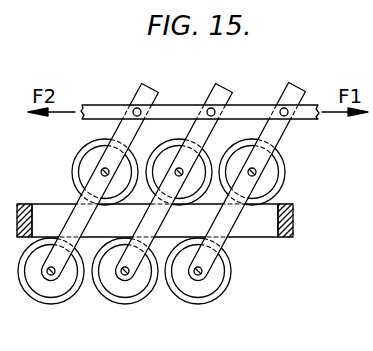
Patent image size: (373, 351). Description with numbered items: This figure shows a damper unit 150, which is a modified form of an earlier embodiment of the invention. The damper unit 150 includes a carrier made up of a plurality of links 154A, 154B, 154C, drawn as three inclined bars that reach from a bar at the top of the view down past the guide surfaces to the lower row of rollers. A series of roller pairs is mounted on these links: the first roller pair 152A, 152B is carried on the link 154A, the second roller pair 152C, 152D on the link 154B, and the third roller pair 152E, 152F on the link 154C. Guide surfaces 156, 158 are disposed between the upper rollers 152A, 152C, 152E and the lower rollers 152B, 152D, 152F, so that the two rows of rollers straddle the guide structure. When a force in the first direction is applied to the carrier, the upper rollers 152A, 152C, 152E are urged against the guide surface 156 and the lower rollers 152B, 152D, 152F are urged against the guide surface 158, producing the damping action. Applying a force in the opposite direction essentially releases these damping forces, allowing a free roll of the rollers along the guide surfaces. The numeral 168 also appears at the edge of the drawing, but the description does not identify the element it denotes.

The upper bar 150 is at (297, 68).
The roller 152A is at (92, 160).
The roller 152B is at (42, 283).
The roller 152C is at (278, 184).
The roller 152D is at (125, 283).
The roller 152E is at (279, 158).
The roller 152F is at (204, 289).
The link 154A is at (147, 96).
The link 154B is at (219, 97).
The link 154C is at (288, 89).
The end cap 156 is at (291, 203).
The lower bar 158 is at (261, 240).
The element 168 is at (358, 256).